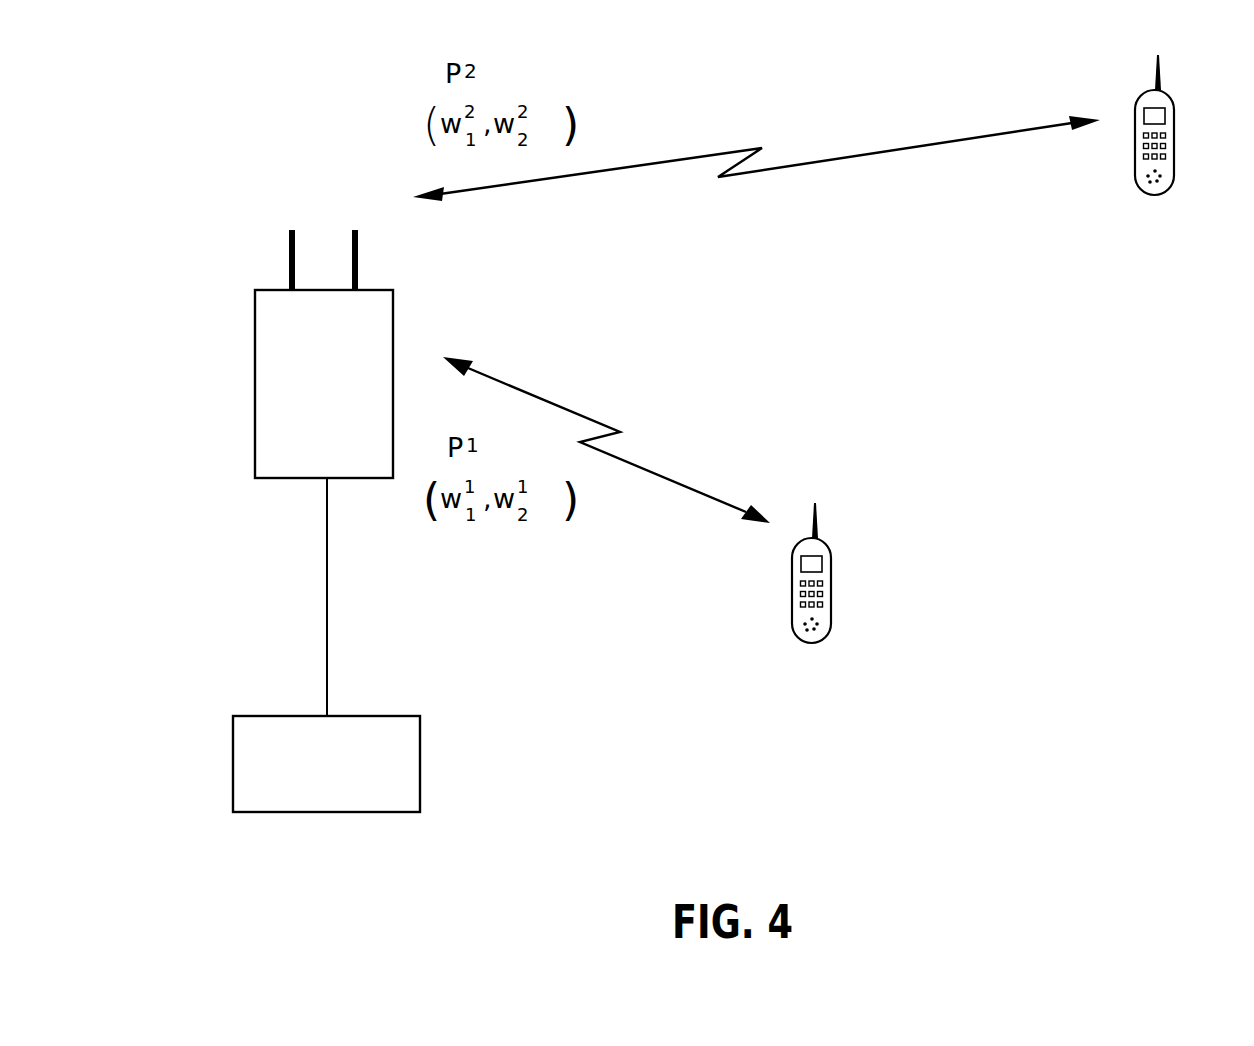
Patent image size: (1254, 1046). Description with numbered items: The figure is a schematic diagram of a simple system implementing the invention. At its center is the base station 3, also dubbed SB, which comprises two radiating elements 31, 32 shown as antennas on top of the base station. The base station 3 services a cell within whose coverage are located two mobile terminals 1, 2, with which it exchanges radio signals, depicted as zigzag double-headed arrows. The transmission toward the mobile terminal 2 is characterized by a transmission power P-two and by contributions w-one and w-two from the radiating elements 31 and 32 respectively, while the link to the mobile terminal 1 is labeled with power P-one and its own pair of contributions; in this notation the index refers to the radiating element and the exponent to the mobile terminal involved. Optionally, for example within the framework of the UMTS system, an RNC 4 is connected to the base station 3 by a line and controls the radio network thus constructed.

The mobile terminal 1 is at (832, 592).
The mobile terminal 2 is at (1175, 145).
The base station 3 is at (255, 415).
The radiating element 31 is at (288, 260).
The radiating element 32 is at (358, 258).
The RNC 4 is at (233, 764).